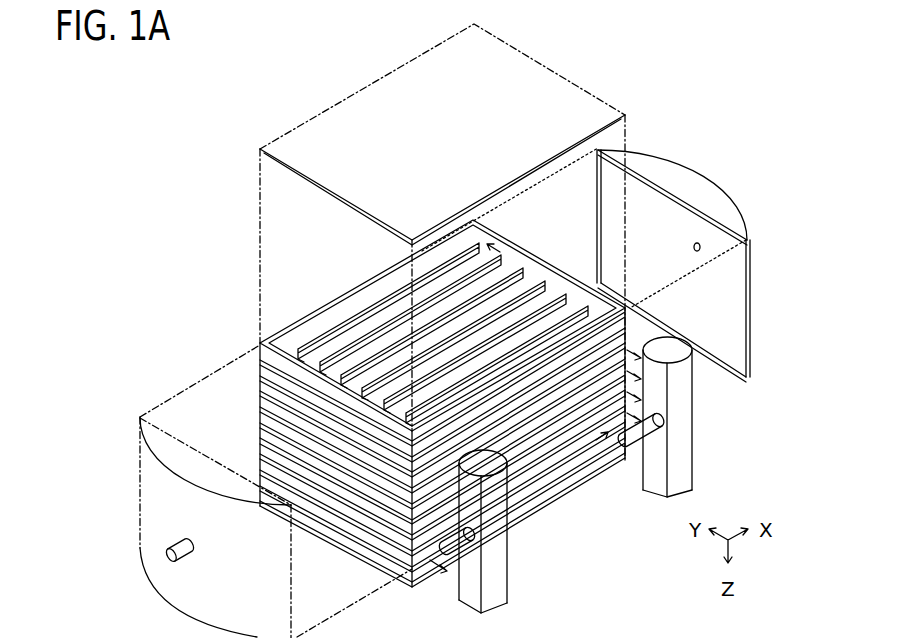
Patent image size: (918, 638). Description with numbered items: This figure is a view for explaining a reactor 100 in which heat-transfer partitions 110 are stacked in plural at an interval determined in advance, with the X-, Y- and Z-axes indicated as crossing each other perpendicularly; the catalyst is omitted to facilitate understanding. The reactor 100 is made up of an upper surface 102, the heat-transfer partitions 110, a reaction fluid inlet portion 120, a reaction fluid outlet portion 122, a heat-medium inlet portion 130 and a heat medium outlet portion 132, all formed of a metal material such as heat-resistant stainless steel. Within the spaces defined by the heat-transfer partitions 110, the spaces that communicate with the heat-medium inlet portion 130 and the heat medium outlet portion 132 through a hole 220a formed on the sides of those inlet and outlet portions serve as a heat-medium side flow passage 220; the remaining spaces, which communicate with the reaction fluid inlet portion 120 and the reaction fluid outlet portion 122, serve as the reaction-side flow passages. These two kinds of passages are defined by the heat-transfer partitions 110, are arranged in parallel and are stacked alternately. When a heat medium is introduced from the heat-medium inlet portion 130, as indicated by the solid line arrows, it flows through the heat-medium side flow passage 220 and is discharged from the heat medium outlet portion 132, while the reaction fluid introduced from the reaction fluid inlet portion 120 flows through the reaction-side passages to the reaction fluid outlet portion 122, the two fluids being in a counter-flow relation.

The reactor 100 is at (251, 92).
The upper surface 102 is at (470, 143).
The heat-transfer partition 110 is at (262, 368).
The reaction fluid inlet portion 120 is at (237, 594).
The reaction fluid outlet portion 122 is at (699, 190).
The heat-medium inlet portion 130 is at (693, 468).
The heat medium outlet portion 132 is at (508, 572).
The heat-medium side flow passage 220 is at (385, 500).
The hole 220a is at (442, 544).